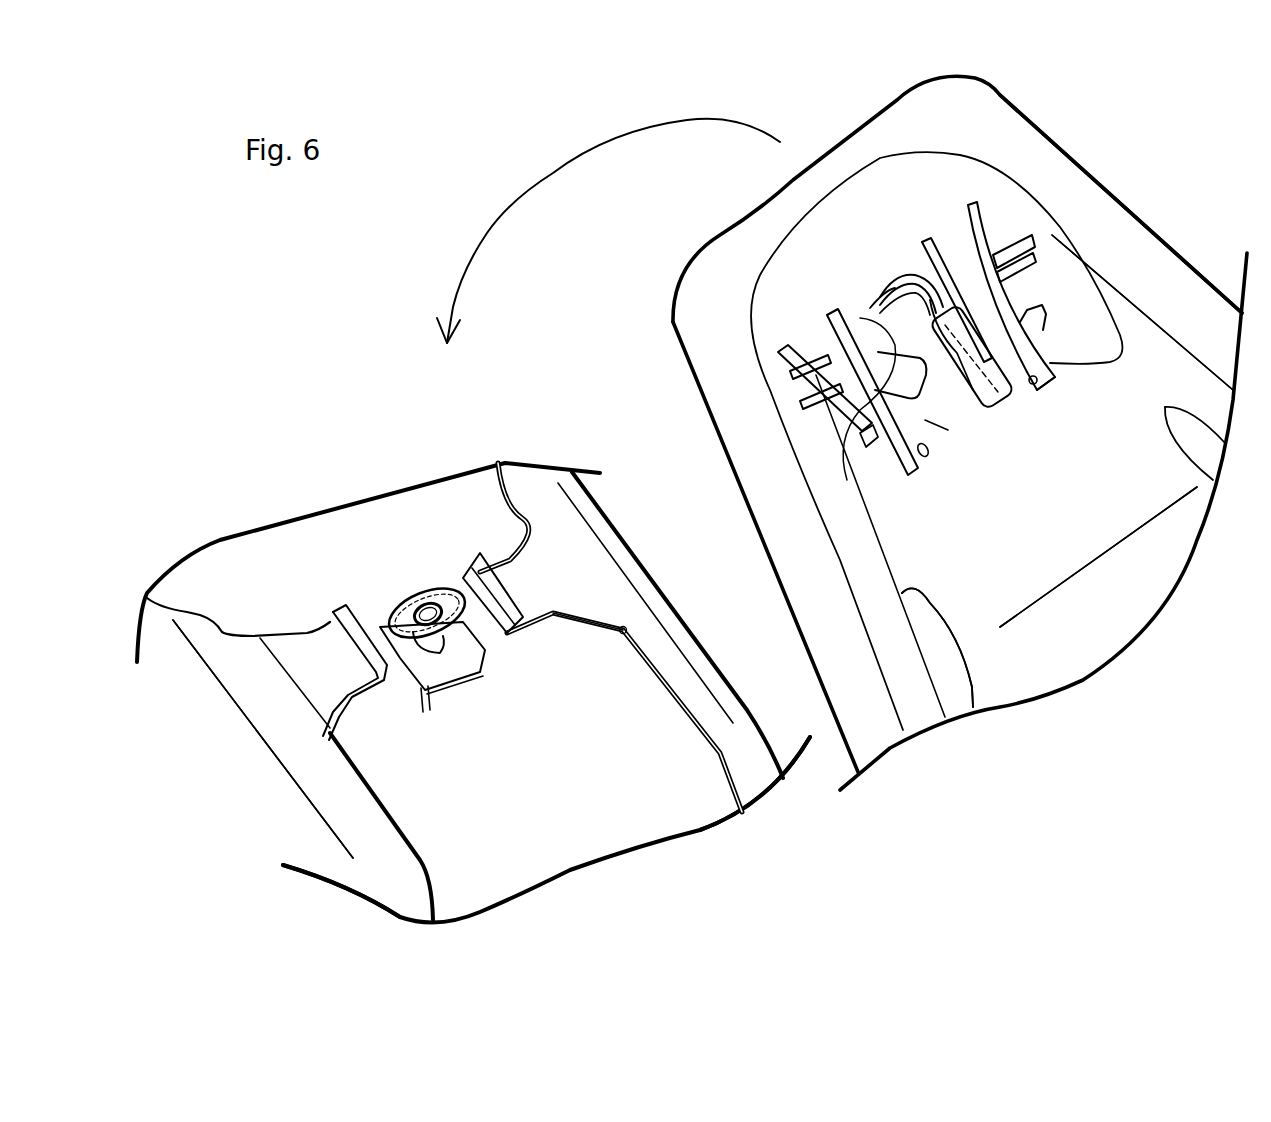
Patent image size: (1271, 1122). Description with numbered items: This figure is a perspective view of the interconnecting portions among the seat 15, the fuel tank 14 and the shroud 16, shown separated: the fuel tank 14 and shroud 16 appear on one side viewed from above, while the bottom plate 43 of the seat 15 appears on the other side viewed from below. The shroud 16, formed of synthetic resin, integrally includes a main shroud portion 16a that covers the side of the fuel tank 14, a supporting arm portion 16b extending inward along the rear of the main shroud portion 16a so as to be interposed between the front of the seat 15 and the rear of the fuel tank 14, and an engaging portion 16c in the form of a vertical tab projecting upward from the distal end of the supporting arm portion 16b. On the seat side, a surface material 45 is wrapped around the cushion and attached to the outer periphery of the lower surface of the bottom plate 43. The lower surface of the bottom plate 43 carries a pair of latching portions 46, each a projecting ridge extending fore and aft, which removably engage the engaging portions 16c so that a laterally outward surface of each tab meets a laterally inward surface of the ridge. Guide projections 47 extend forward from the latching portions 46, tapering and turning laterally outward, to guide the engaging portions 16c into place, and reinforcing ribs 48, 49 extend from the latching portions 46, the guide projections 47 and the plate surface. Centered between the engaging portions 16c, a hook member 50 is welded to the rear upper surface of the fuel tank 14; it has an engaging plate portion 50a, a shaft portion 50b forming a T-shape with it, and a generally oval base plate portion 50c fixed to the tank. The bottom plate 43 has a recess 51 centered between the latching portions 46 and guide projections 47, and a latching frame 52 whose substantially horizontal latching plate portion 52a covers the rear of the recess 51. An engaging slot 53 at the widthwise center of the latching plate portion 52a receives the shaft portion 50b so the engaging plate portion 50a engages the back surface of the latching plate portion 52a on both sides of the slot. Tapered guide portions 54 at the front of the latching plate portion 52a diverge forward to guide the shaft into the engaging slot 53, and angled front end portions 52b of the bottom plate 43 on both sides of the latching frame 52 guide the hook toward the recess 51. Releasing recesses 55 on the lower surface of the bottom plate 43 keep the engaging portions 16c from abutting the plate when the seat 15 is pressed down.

The fuel tank 14 is at (530, 814).
The seat 15 is at (1037, 115).
The shroud 16 is at (634, 545).
The main shroud portion 16a is at (712, 686).
The supporting arm portion 16b is at (235, 653).
The engaging portion 16c is at (343, 607).
The bottom plate 43 is at (995, 564).
The surface material 45 is at (1148, 260).
The latching portion 46 is at (1123, 350).
The guide projection 47 is at (993, 245).
The reinforcing rib 48 is at (1075, 290).
The reinforcing rib 49 is at (1057, 213).
The hook member 50 is at (443, 593).
The engaging plate portion 50a is at (410, 605).
The shaft portion 50b is at (433, 640).
The base plate portion 50c is at (423, 700).
The recess 51 is at (900, 265).
The latching frame 52 is at (897, 289).
The latching plate portion 52a is at (960, 437).
The front end portion 52b is at (925, 240).
The engaging slot 53 is at (1027, 343).
The tapered guide portion 54 is at (972, 215).
The releasing recess 55 is at (1043, 383).